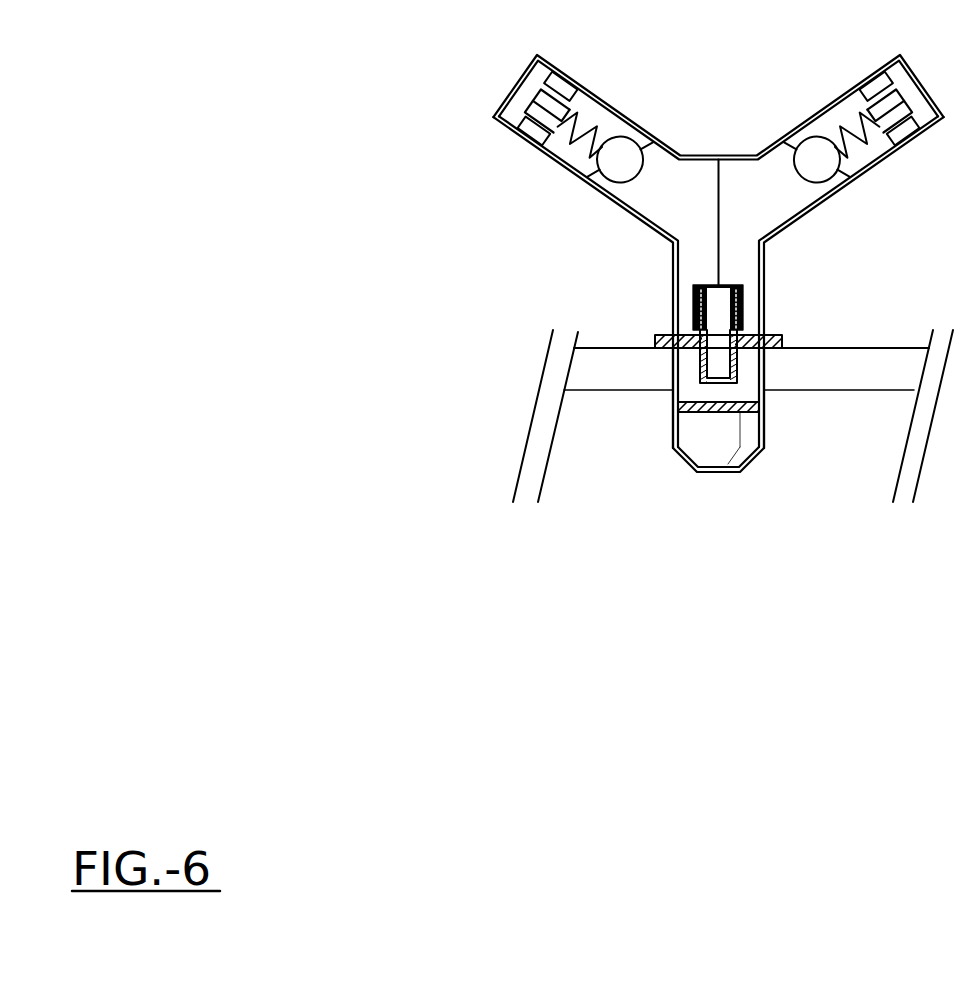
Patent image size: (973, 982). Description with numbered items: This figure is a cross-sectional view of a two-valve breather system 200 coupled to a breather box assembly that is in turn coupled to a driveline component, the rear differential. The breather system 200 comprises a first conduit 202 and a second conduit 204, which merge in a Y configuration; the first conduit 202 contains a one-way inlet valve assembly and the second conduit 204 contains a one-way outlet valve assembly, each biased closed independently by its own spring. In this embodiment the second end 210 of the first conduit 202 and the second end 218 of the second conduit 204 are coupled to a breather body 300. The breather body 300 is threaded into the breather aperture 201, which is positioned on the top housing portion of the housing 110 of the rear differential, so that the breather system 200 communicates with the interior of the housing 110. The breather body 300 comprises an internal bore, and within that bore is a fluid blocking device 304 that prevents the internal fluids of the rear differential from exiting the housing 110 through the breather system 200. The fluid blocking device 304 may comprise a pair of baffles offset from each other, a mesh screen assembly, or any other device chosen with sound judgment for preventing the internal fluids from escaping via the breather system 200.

The breather system 200 is at (718, 241).
The first conduit 202 is at (764, 197).
The second conduit 204 is at (655, 182).
The second end of the first conduit 210 is at (745, 273).
The second end of the second conduit 218 is at (700, 273).
The housing 110 is at (863, 370).
The breather aperture 201 is at (775, 385).
The breather body 300 is at (766, 474).
The fluid blocking device 304 is at (700, 414).